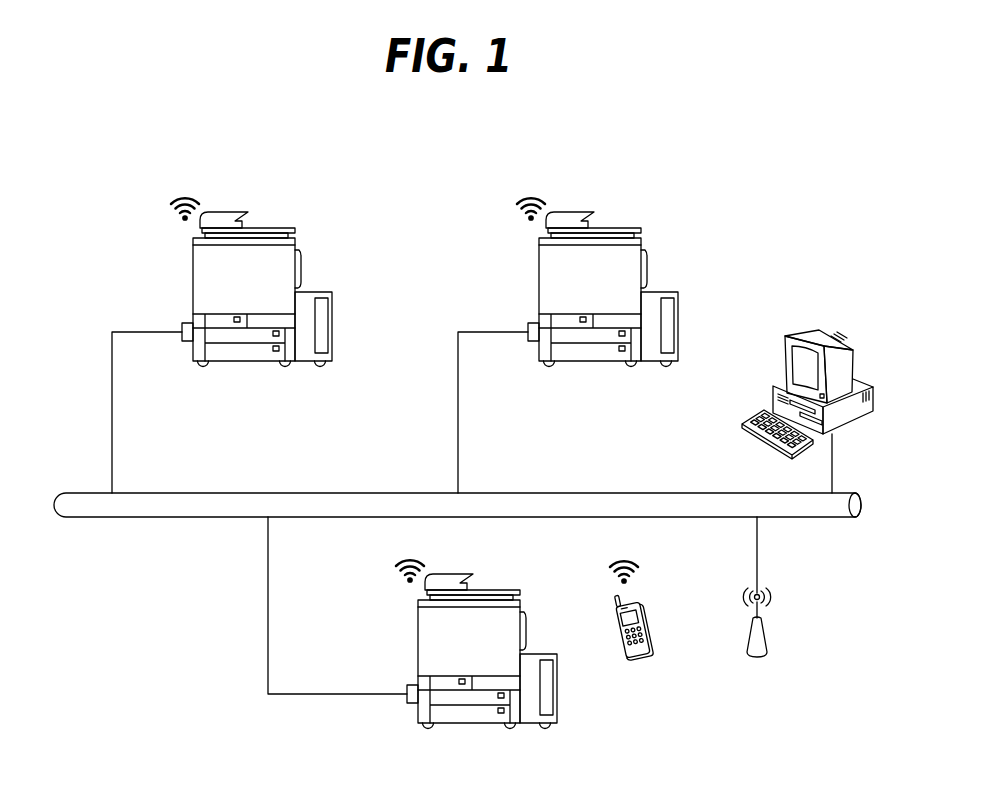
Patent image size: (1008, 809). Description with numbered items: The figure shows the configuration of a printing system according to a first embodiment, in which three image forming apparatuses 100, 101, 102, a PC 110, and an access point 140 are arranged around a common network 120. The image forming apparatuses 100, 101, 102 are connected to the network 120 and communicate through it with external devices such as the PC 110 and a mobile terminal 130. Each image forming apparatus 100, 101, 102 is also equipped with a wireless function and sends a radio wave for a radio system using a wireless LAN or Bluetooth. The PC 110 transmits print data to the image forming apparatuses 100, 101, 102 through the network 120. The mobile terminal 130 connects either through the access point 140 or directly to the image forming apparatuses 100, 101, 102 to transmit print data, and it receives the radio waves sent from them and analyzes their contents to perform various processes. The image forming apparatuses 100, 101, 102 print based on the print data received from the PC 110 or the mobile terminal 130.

The image forming apparatus 100 is at (476, 632).
The image forming apparatus 101 is at (277, 228).
The image forming apparatus 102 is at (597, 271).
The PC 110 is at (790, 330).
The network 120 is at (665, 493).
The mobile terminal 130 is at (647, 647).
The access point 140 is at (768, 639).